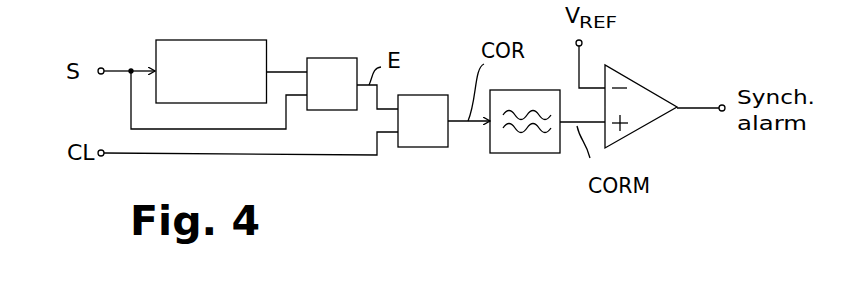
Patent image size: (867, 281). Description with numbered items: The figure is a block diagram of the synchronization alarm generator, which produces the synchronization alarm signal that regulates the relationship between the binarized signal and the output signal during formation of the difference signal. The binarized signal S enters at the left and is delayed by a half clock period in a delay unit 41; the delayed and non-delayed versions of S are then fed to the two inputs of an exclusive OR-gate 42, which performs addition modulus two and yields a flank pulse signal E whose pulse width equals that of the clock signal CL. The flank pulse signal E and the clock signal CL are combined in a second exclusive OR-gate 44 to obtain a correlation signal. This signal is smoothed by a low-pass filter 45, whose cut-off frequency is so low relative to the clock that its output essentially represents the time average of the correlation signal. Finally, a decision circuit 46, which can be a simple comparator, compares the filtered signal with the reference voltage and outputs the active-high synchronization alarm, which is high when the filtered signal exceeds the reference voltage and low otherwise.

The delay unit 41 is at (248, 50).
The exclusive OR-gate 42 is at (350, 63).
The exclusive OR-gate 44 is at (440, 100).
The low-pass filter 45 is at (548, 150).
The decision circuit 46 is at (633, 85).